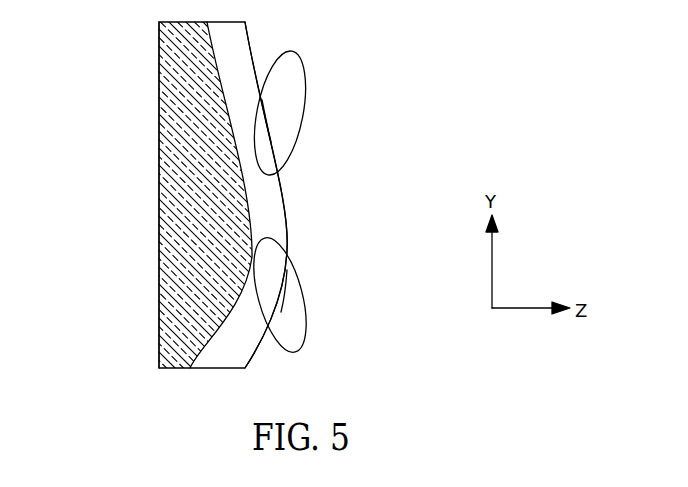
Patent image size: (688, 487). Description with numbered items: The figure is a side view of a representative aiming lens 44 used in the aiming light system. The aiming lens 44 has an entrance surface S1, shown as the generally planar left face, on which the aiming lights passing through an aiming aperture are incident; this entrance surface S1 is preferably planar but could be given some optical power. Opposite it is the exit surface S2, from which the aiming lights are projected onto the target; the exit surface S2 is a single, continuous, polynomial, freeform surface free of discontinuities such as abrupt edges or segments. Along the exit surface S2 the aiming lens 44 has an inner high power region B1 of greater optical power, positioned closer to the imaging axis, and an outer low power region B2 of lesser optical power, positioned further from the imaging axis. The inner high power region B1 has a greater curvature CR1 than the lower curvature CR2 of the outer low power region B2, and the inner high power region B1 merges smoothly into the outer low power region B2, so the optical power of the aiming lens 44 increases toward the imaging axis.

The aiming lens 44 is at (167, 228).
The entrance surface S1 is at (158, 173).
The exit surface S2 is at (287, 222).
The inner high power region B1 is at (287, 335).
The outer low power region B2 is at (298, 82).
The greater curvature CR1 is at (280, 295).
The lower curvature CR2 is at (265, 118).